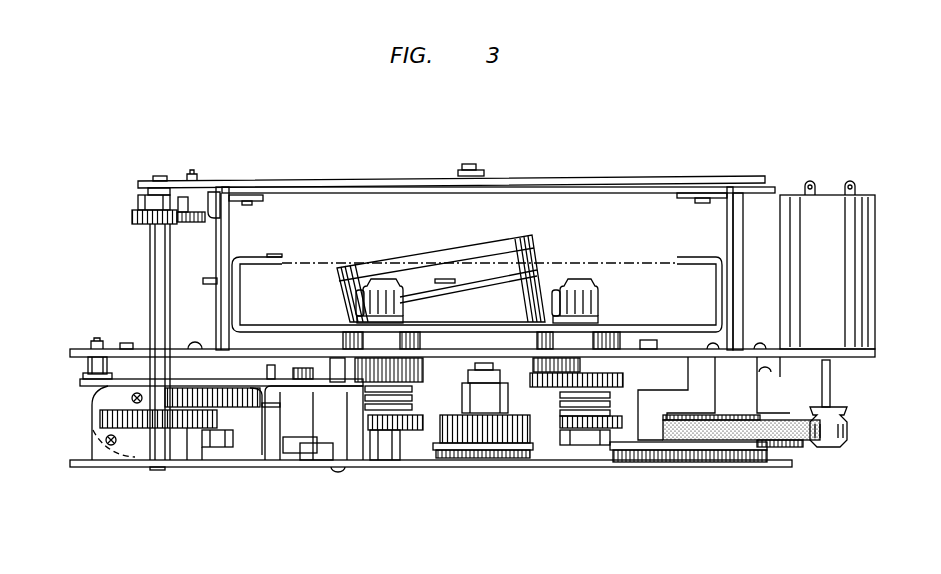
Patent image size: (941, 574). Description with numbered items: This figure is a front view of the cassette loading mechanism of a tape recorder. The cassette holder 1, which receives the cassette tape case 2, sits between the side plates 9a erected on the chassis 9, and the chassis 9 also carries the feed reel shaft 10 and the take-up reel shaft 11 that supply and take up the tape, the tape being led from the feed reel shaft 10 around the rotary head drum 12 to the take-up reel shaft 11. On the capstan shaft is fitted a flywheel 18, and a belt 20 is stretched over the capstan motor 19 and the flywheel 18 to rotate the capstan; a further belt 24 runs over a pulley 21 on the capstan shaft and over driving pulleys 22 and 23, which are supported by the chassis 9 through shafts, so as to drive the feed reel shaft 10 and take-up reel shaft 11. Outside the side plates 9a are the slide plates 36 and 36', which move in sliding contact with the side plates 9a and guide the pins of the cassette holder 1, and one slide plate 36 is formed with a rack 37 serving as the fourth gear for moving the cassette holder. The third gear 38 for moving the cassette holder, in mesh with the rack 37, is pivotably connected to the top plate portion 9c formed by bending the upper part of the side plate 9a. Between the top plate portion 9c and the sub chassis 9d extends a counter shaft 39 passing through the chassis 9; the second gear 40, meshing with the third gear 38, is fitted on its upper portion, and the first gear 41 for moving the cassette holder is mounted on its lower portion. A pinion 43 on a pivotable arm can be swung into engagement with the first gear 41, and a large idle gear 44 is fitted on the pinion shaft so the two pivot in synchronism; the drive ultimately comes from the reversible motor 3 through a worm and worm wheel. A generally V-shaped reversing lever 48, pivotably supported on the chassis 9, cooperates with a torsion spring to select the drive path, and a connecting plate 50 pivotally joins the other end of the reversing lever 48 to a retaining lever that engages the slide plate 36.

The cassette holder 1 is at (272, 256).
The cassette tape case 2 is at (650, 278).
The reversible motor 3 is at (92, 418).
The chassis 9 is at (73, 349).
The side plates 9a is at (227, 227).
The top plate portion 9c is at (152, 181).
The sub chassis 9d is at (400, 467).
The feed reel shaft 10 is at (383, 295).
The take-up reel shaft 11 is at (583, 290).
The rotary head drum 12 is at (520, 258).
The flywheel 18 is at (800, 447).
The capstan motor 19 is at (865, 292).
The belt 20 is at (847, 431).
The pulley 21 is at (752, 450).
The driving pulley 22 is at (530, 450).
The driving pulley 23 is at (680, 448).
The belt 24 is at (630, 445).
The slide plate 36 is at (162, 290).
The slide plate 36' is at (780, 271).
The rack 37 is at (215, 208).
The third gear for moving the cassette holder 38 is at (193, 211).
The counter shaft 39 is at (150, 266).
The second gear for moving the cassette holder 40 is at (132, 218).
The first gear for moving the cassette holder 41 is at (190, 428).
The pinion 43 is at (220, 440).
The large idle gear 44 is at (240, 423).
The reversing lever 48 is at (80, 385).
The connecting plate 50 is at (83, 370).